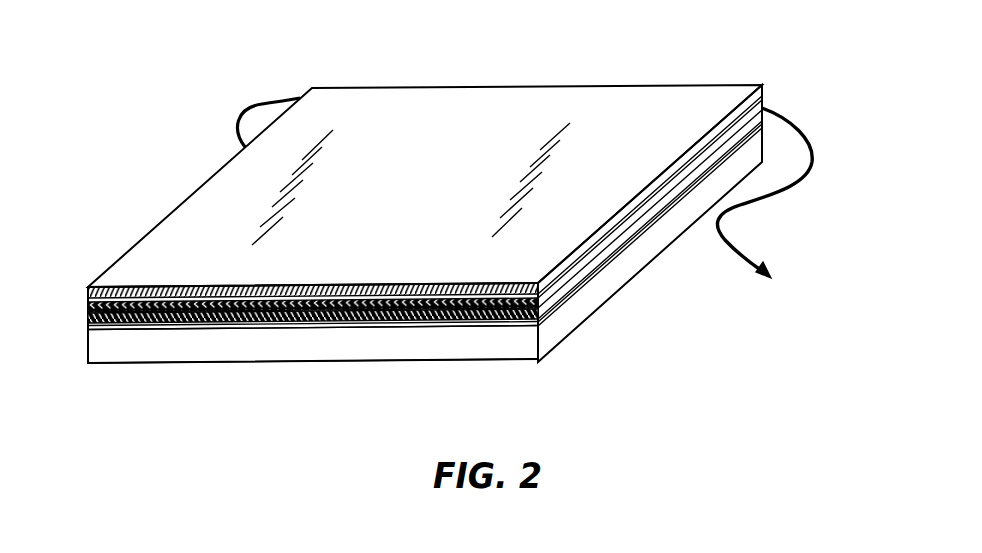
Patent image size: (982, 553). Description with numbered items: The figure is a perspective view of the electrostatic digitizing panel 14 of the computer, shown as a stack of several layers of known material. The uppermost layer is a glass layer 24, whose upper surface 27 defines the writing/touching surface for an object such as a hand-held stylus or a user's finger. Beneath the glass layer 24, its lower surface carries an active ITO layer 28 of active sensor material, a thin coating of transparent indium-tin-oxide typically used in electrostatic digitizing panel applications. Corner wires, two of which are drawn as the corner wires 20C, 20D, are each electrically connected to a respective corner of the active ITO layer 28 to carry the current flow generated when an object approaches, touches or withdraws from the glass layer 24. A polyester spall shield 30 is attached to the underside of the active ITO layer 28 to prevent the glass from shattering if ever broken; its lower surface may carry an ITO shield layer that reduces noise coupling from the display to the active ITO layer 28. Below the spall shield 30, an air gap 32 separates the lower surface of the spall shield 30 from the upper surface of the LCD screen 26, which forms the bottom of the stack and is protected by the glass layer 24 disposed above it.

The electrostatic digitizing panel 14 is at (152, 91).
The corner wire 20C is at (258, 103).
The corner wire 20D is at (790, 183).
The upper surface 27 is at (483, 118).
The glass layer 24 is at (156, 300).
The polyester spall shield 30 is at (345, 322).
The air gap 32 is at (245, 325).
The active ITO layer 28 is at (152, 325).
The LCD screen 26 is at (488, 345).